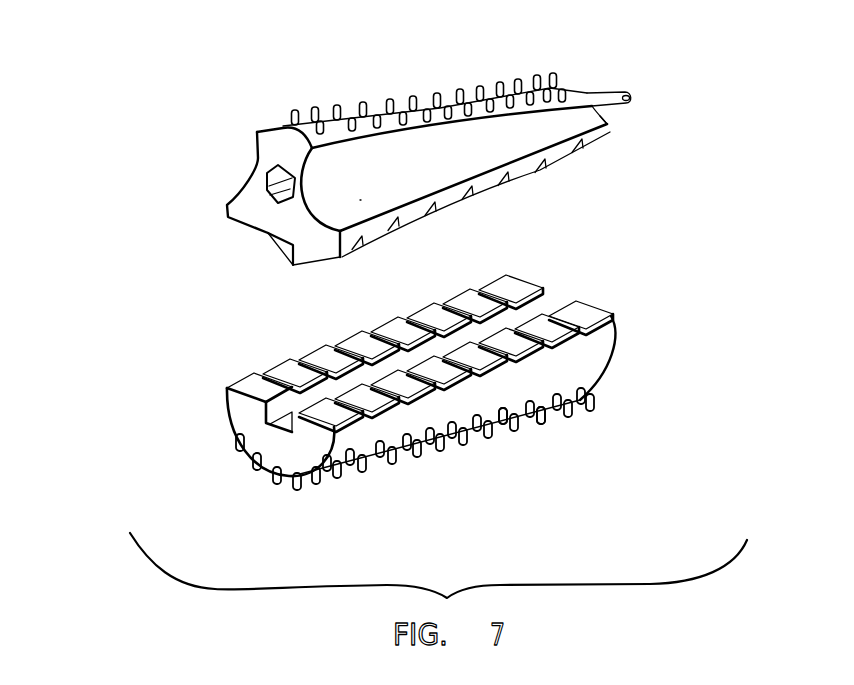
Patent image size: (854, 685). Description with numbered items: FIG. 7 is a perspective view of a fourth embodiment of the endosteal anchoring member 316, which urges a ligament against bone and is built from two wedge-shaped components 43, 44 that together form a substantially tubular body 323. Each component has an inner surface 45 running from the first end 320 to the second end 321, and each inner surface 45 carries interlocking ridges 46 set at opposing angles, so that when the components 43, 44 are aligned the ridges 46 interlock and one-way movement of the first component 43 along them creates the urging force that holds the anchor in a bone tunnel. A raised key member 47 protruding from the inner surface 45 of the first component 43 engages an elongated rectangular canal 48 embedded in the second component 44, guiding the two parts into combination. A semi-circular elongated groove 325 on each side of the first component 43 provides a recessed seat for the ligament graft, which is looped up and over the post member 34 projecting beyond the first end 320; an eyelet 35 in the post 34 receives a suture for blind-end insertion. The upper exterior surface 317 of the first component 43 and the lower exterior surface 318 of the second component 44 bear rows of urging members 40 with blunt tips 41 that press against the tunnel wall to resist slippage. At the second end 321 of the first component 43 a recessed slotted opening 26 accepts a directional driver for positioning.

The endosteal anchoring member 316 is at (188, 333).
The first wedge-shaped component 43 is at (452, 84).
The second wedge-shaped component 44 is at (410, 470).
The upper exterior surface 317 is at (390, 108).
The lower exterior surface 318 is at (448, 452).
The second end 321 is at (282, 147).
The recessed slotted opening 26 is at (267, 184).
The raised key member 47 is at (281, 250).
The interlocking ridges 46 is at (582, 160).
The semi-circular elongated groove 325 is at (436, 165).
The first end 320 is at (611, 124).
The post member 34 is at (603, 95).
The eyelet 35 is at (629, 95).
The inner surface 45 is at (580, 310).
The tubular body 323 is at (563, 368).
The elongated rectangular canal 48 is at (283, 423).
The urging members 40 is at (500, 442).
The blunt tips 41 is at (540, 428).